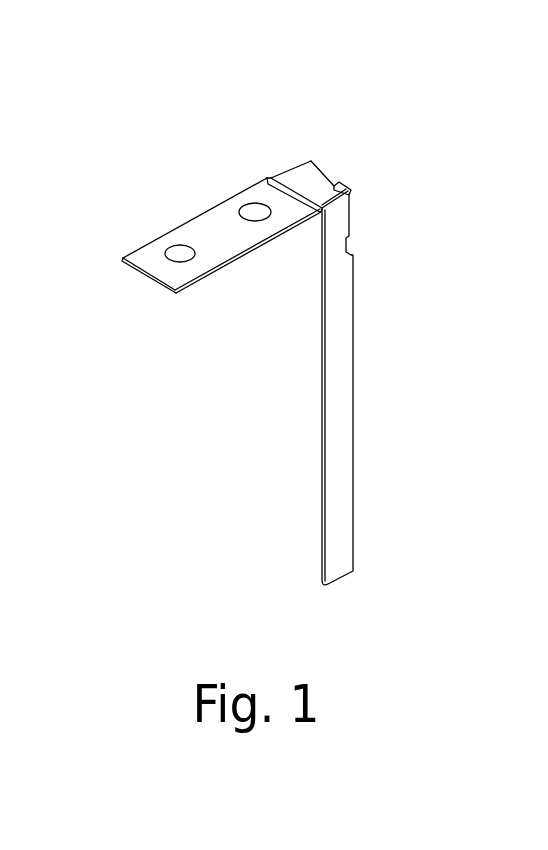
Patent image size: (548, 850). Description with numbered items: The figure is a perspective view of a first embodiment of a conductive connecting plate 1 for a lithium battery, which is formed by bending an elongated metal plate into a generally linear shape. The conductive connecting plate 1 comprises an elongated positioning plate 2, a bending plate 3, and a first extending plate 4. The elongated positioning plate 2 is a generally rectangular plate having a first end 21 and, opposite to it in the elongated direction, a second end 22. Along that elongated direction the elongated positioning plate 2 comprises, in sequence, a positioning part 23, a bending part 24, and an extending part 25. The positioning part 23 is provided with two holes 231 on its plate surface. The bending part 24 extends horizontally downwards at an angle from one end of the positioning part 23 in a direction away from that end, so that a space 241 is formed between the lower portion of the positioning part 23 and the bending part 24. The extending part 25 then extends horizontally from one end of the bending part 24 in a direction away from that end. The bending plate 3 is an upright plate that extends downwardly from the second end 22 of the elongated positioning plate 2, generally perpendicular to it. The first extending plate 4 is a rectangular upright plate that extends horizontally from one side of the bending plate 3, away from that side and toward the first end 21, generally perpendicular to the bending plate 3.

The conductive connecting plate 1 is at (337, 80).
The elongated positioning plate 2 is at (247, 78).
The first end 21 is at (143, 273).
The second end 22 is at (323, 172).
The positioning part 23 is at (198, 228).
The holes 231 is at (180, 262).
The bending part 24 is at (268, 178).
The space 241 is at (253, 250).
The extending part 25 is at (300, 172).
The bending plate 3 is at (348, 187).
The first extending plate 4 is at (347, 403).